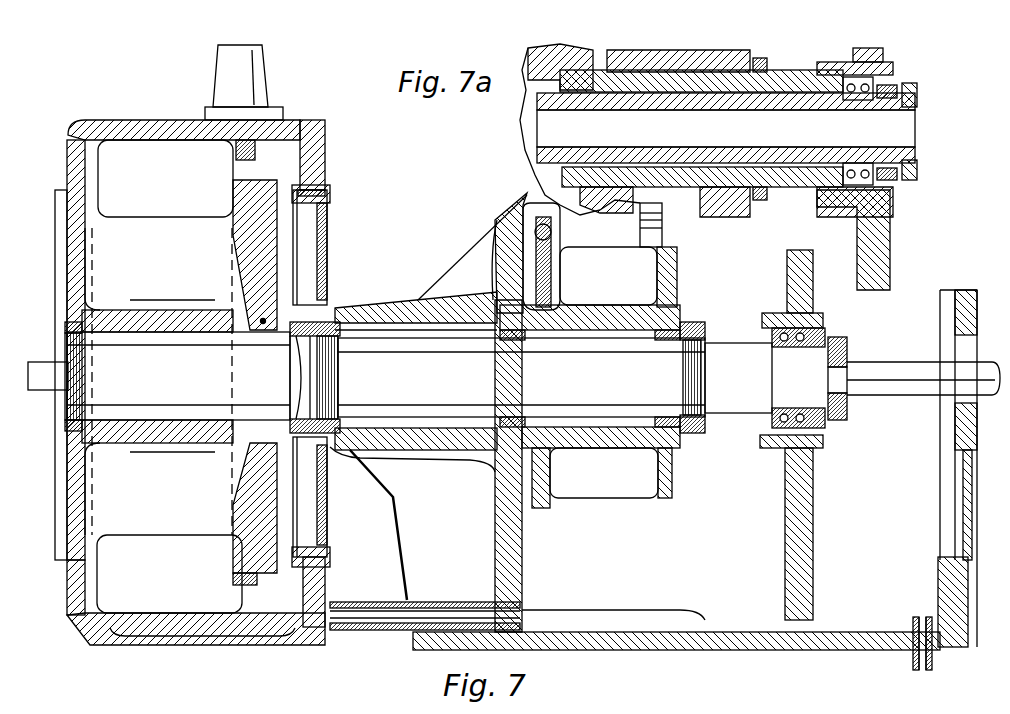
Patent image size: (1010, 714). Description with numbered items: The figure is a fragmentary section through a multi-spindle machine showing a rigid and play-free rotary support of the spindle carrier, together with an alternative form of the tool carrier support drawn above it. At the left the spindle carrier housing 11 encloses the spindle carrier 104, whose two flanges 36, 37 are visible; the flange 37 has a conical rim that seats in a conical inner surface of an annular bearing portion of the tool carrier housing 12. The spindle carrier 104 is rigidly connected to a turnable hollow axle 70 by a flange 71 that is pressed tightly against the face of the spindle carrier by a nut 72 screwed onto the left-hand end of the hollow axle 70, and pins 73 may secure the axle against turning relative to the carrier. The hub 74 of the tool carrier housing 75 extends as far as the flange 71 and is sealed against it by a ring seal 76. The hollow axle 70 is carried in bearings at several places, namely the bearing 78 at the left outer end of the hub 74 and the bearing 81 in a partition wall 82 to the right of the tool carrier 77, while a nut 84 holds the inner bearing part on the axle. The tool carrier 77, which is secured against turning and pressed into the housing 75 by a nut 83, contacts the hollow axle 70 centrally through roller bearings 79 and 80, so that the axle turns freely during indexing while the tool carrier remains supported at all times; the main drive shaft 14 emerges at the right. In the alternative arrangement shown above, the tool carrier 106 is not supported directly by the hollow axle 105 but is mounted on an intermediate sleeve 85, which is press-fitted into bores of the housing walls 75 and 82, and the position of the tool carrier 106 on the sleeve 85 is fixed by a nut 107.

In FIG. 7, the spindle carrier housing 11 is at (155, 650).
In FIG. 7, the tool carrier housing 12 is at (860, 650).
In FIG. 7, the main drive shaft 14 is at (908, 376).
In FIG. 7, the flange 36 is at (248, 233).
In FIG. 7, the flange 37 is at (78, 254).
In FIG. 7, the hollow axle 70 is at (411, 345).
In FIG. 7, the flange 71 is at (283, 355).
In FIG. 7, the nut 72 is at (80, 314).
In FIG. 7, the pins 73 is at (280, 322).
In FIG. 7, the hub 74 is at (368, 306).
In FIG. 7, the tool carrier housing 75 is at (500, 216).
In FIG. 7A, the tool carrier housing 75 is at (545, 65).
In FIG. 7, the ring seal 76 is at (293, 300).
In FIG. 7, the tool carrier 77 is at (664, 285).
In FIG. 7, the bearing 78 is at (340, 455).
In FIG. 7, the roller bearing 79 is at (566, 318).
In FIG. 7, the roller bearing 80 is at (684, 441).
In FIG. 7, the bearing 81 is at (780, 441).
In FIG. 7, the partition wall 82 is at (795, 286).
In FIG. 7, the nut 83 is at (698, 323).
In FIG. 7, the nut 84 is at (839, 426).
In FIG. 7A, the intermediate sleeve 85 is at (805, 183).
In FIG. 7, the spindle carrier 104 is at (148, 302).
In FIG. 7A, the hollow axle 105 is at (697, 101).
In FIG. 7A, the tool carrier 106 is at (622, 66).
In FIG. 7A, the nut 107 is at (767, 65).